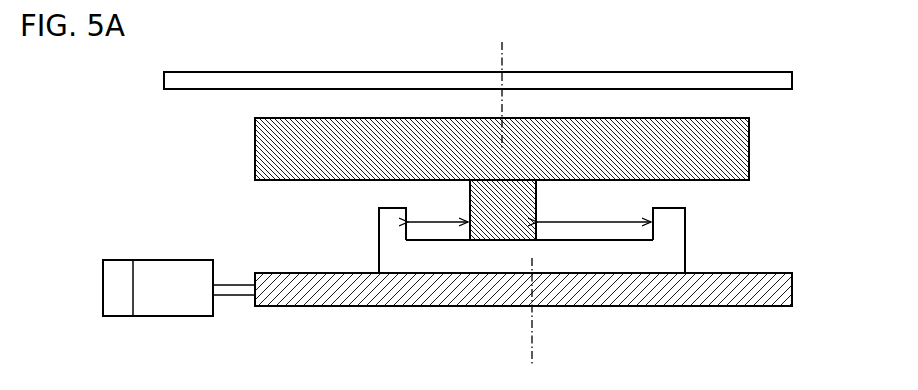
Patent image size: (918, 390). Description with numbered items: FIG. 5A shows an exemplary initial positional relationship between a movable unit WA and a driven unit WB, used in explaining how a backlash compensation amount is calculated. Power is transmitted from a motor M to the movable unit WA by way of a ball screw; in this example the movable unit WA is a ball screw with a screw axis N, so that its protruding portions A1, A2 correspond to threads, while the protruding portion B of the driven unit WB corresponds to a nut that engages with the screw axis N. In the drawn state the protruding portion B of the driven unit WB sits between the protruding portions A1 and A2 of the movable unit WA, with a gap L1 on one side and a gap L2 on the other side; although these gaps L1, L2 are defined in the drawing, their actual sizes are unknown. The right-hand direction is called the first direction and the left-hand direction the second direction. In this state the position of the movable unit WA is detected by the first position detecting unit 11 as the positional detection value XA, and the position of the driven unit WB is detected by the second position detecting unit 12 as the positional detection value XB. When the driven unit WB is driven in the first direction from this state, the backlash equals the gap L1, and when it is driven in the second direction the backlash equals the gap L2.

The second position detecting unit 12 is at (737, 82).
The driven unit WB is at (742, 152).
The protruding portion B is at (518, 200).
The protruding portion A1 is at (390, 218).
The protruding portion A2 is at (677, 217).
The gap L1 is at (438, 207).
The gap L2 is at (594, 209).
The movable unit WA is at (672, 263).
The motor M is at (163, 270).
The first position detecting unit 11 is at (117, 308).
The screw axis N is at (293, 297).
The positional detection value XA is at (529, 324).
The positional detection value XB is at (500, 82).